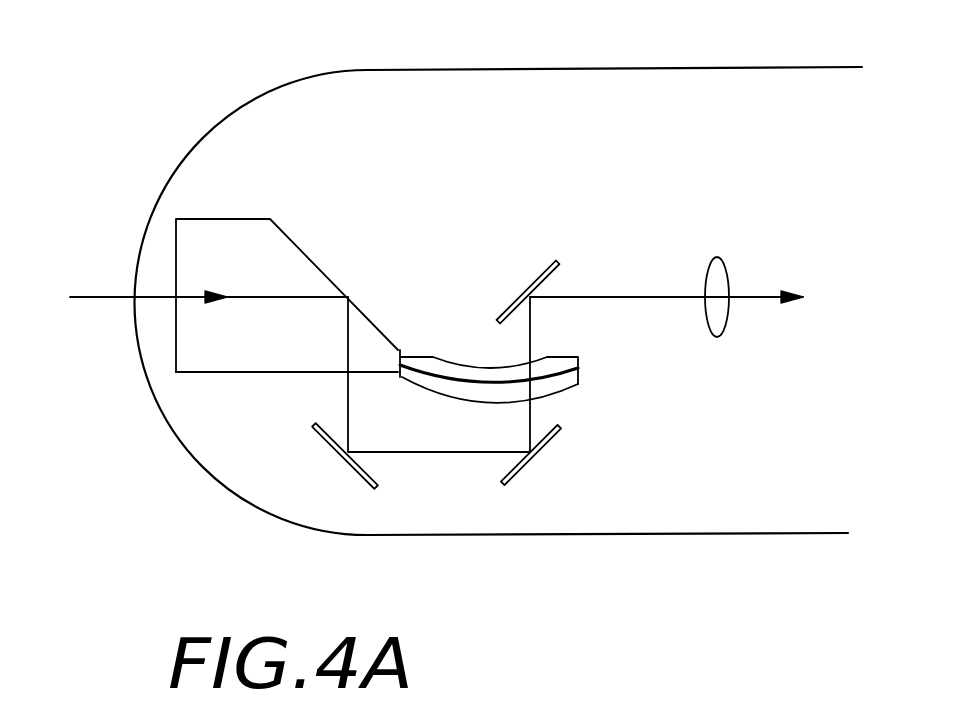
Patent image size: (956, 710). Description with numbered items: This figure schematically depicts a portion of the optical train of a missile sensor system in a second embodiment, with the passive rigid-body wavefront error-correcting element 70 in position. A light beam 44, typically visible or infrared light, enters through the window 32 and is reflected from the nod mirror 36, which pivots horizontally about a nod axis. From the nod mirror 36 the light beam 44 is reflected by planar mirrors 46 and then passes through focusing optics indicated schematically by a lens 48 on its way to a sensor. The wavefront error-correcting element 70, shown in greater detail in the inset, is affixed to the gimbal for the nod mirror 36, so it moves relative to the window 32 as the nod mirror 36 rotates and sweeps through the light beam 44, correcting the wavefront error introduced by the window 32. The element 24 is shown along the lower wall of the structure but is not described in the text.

The catheter body 24 is at (579, 535).
The window 32 is at (243, 108).
The nod mirror 36 is at (342, 288).
The light beam 44 is at (256, 297).
The planar mirrors 46 is at (545, 270).
The lens 48 is at (716, 262).
The rigid-body wavefront error-correcting element 70 is at (557, 382).